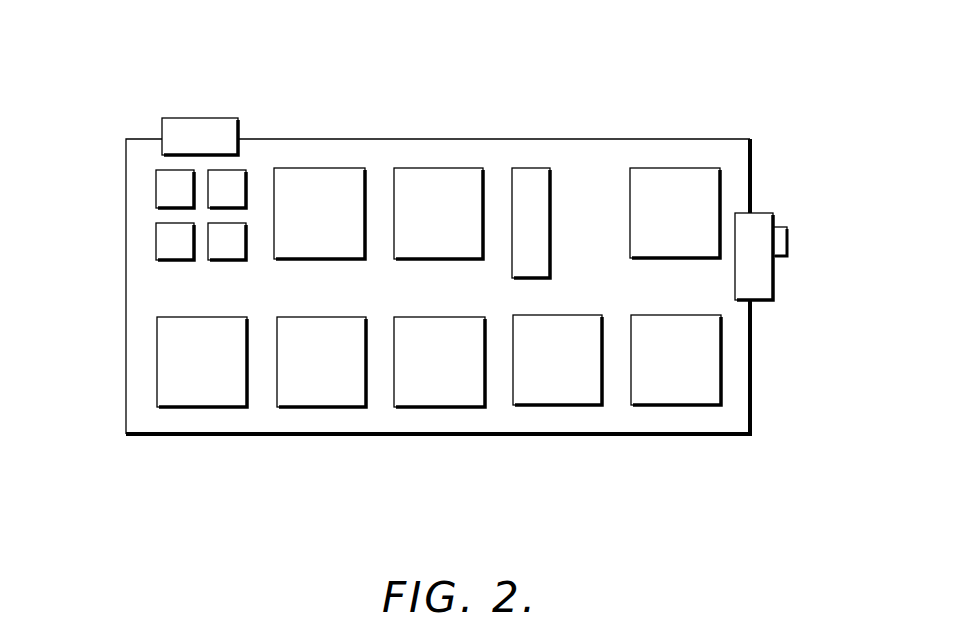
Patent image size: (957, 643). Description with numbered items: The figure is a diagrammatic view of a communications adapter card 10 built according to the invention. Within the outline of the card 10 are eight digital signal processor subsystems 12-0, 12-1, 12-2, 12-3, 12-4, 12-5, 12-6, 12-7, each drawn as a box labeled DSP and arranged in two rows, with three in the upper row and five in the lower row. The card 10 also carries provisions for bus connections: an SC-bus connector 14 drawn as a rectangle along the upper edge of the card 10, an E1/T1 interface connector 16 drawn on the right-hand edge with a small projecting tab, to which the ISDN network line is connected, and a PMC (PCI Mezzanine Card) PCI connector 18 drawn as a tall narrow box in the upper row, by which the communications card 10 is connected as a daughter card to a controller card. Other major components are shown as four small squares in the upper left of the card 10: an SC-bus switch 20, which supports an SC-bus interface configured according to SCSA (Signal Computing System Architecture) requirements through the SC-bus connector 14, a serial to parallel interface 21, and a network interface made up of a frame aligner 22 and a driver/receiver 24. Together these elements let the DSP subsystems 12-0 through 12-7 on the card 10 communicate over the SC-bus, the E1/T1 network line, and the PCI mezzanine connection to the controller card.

The communications adapter card 10 is at (120, 349).
The digital signal processor subsystem 12-0 is at (193, 407).
The digital signal processor subsystem 12-1 is at (312, 407).
The digital signal processor subsystem 12-2 is at (430, 407).
The digital signal processor subsystem 12-3 is at (548, 405).
The digital signal processor subsystem 12-4 is at (666, 405).
The digital signal processor subsystem 12-5 is at (667, 168).
The digital signal processor subsystem 12-6 is at (429, 168).
The digital signal processor subsystem 12-7 is at (310, 168).
The SC-bus connector 14 is at (200, 118).
The E1/T1 interface connector 16 is at (775, 277).
The PMC PCI connector 18 is at (532, 168).
The SC-bus switch 20 is at (155, 198).
The serial to parallel interface 21 is at (247, 180).
The frame aligner 22 is at (155, 250).
The driver/receiver 24 is at (225, 262).